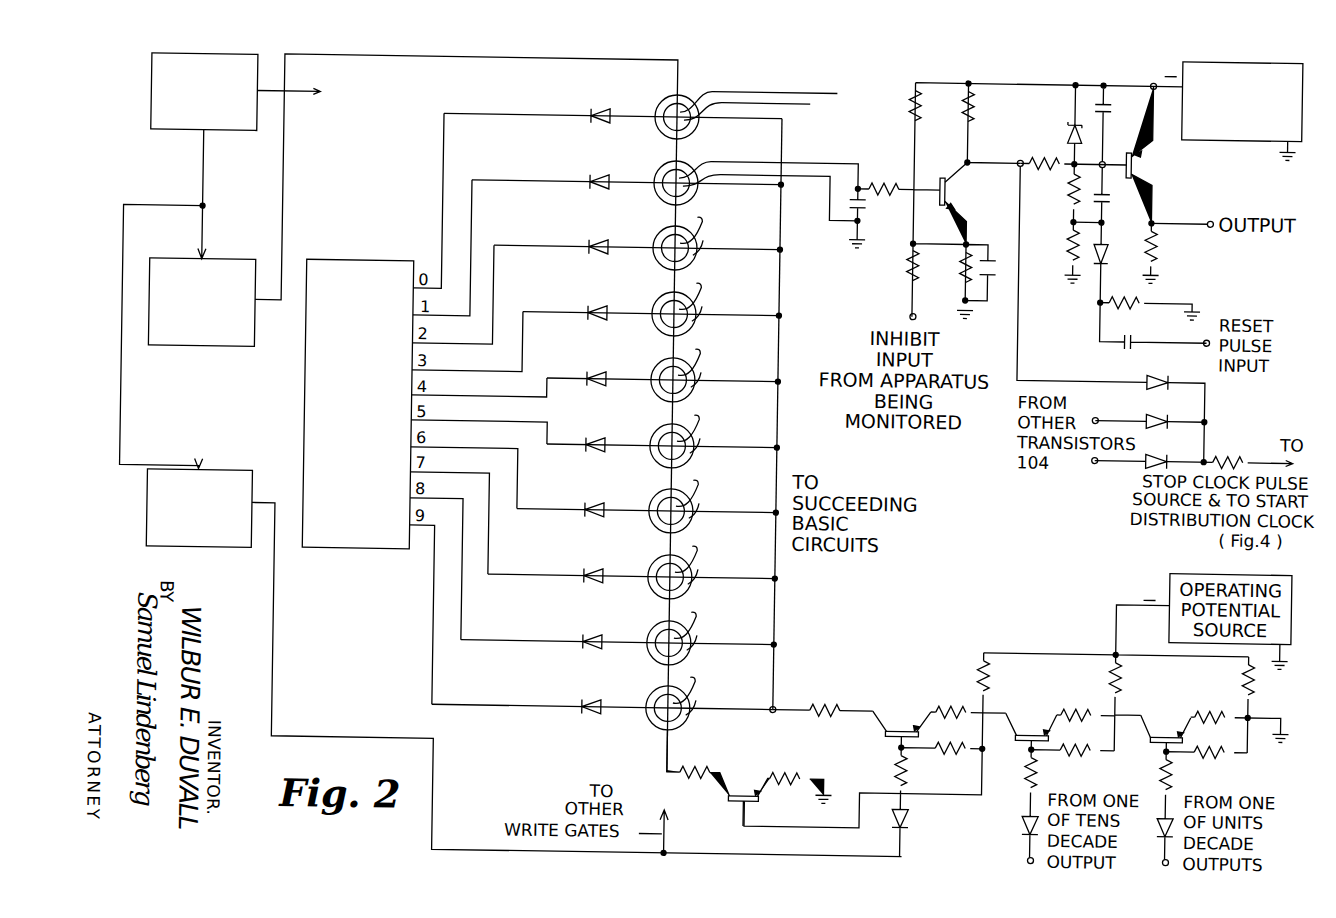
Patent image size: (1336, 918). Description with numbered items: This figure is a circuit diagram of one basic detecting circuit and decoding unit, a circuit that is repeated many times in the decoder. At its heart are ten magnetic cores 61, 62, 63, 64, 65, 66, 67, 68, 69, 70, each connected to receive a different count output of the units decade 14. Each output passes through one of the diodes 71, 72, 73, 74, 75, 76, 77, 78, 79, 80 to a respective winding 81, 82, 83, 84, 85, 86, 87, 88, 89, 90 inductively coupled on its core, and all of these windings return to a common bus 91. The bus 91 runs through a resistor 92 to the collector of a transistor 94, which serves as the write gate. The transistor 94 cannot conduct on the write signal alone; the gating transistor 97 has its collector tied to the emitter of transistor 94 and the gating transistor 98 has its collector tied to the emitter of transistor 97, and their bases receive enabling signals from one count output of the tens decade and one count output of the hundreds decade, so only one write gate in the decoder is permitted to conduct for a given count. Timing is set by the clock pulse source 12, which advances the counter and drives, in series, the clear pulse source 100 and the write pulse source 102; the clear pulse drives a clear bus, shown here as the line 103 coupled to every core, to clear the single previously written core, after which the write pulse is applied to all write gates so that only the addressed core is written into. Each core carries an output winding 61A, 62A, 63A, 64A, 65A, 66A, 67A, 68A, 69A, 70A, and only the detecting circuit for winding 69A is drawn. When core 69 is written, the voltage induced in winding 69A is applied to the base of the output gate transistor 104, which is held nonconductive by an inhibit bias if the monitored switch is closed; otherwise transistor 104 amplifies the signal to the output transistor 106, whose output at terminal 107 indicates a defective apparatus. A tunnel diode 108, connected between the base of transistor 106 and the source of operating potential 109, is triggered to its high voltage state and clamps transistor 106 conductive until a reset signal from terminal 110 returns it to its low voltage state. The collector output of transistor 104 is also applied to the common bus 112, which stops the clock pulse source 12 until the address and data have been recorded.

The clock pulse source 12 is at (226, 58).
The units decade 14 is at (380, 263).
The magnetic core 61 is at (669, 687).
The magnetic core 62 is at (669, 622).
The magnetic core 63 is at (669, 556).
The magnetic core 64 is at (669, 490).
The magnetic core 65 is at (669, 425).
The magnetic core 66 is at (669, 359).
The magnetic core 67 is at (669, 293).
The magnetic core 68 is at (669, 227).
The magnetic core 69 is at (669, 162).
The magnetic core 70 is at (669, 96).
The output winding 61A is at (701, 684).
The output winding 62A is at (701, 619).
The output winding 63A is at (701, 553).
The output winding 64A is at (701, 487).
The output winding 65A is at (701, 422).
The output winding 66A is at (701, 356).
The output winding 67A is at (701, 290).
The output winding 68A is at (701, 224).
The output winding 69A is at (803, 164).
The output winding 70A is at (798, 93).
The diode 71 is at (601, 702).
The diode 72 is at (601, 637).
The diode 73 is at (601, 571).
The diode 74 is at (601, 505).
The diode 75 is at (601, 440).
The diode 76 is at (601, 374).
The diode 77 is at (601, 308).
The diode 78 is at (601, 242).
The diode 79 is at (601, 177).
The diode 80 is at (601, 111).
The winding 81 is at (731, 707).
The winding 82 is at (731, 642).
The winding 83 is at (731, 576).
The winding 84 is at (731, 510).
The winding 85 is at (731, 445).
The winding 86 is at (731, 379).
The winding 87 is at (731, 313).
The winding 88 is at (731, 247).
The winding 89 is at (736, 186).
The winding 90 is at (778, 120).
The common bus 91 is at (782, 446).
The resistor 92 is at (826, 706).
The write gate transistor 94 is at (904, 694).
The gating transistor 97 is at (1034, 713).
The gating transistor 98 is at (1170, 711).
The clear pulse source generator 100 is at (218, 263).
The write pulse source generator 102 is at (218, 476).
The conductor 103 is at (352, 57).
The output gate transistor 104 is at (967, 190).
The output transistor 106 is at (1147, 168).
The output terminal 107 is at (1208, 212).
The tunnel diode 108 is at (1066, 122).
The source of operating potential 109 is at (1256, 138).
The reset terminal 110 is at (1206, 343).
The common bus 112 is at (1021, 315).